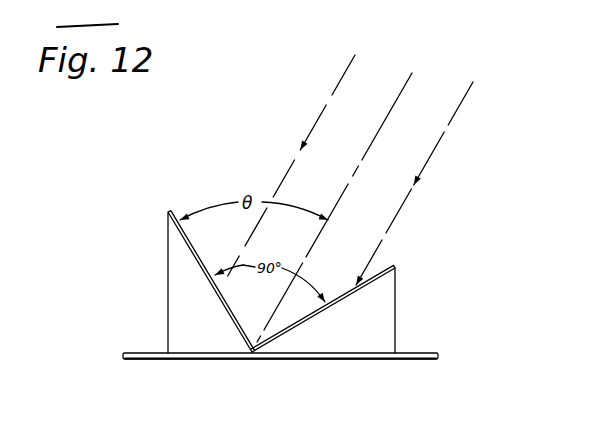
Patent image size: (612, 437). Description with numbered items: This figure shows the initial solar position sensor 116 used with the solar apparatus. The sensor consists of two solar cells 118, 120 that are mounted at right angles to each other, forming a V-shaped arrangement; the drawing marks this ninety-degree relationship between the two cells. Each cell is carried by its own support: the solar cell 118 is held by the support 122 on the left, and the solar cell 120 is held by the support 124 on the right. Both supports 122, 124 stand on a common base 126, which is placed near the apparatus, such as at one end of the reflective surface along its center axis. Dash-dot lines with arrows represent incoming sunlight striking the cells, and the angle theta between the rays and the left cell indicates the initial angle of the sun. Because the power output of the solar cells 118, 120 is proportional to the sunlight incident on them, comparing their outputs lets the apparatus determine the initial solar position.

The initial solar position sensor 116 is at (140, 151).
The solar cell 118 is at (230, 322).
The solar cell 120 is at (300, 327).
The support 122 is at (168, 305).
The support 124 is at (381, 302).
The base 126 is at (420, 352).